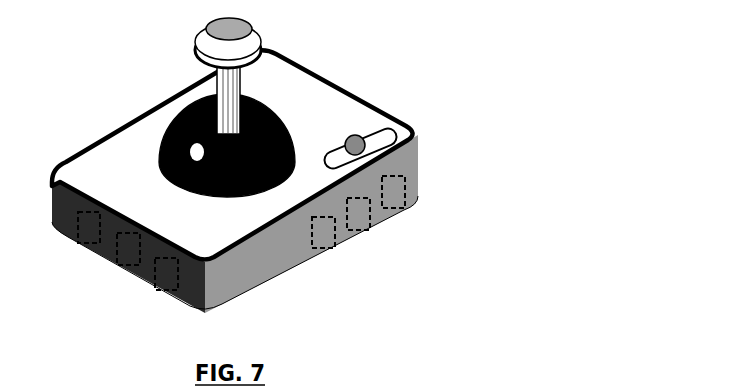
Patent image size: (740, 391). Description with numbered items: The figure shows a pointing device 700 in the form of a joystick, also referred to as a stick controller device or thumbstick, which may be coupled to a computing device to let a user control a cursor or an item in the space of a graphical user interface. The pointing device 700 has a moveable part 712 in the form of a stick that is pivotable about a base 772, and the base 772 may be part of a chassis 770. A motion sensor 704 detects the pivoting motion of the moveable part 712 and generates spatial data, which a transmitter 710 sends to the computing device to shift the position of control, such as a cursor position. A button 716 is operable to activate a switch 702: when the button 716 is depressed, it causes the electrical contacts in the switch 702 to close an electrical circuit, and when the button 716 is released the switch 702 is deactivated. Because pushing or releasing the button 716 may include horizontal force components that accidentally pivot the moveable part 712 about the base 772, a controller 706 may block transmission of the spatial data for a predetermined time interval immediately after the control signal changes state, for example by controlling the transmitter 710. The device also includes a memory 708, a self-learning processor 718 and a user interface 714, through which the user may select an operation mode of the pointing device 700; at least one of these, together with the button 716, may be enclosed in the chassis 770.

The pointing device 700 is at (550, 95).
The switch 702 is at (80, 244).
The motion sensor 704 is at (128, 268).
The controller 706 is at (165, 292).
The memory 708 is at (397, 210).
The transmitter 710 is at (363, 232).
The moveable part 712 is at (228, 97).
The user interface 714 is at (368, 147).
The button 716 is at (259, 34).
The self-learning processor 718 is at (328, 250).
The chassis 770 is at (343, 90).
The base 772 is at (158, 185).